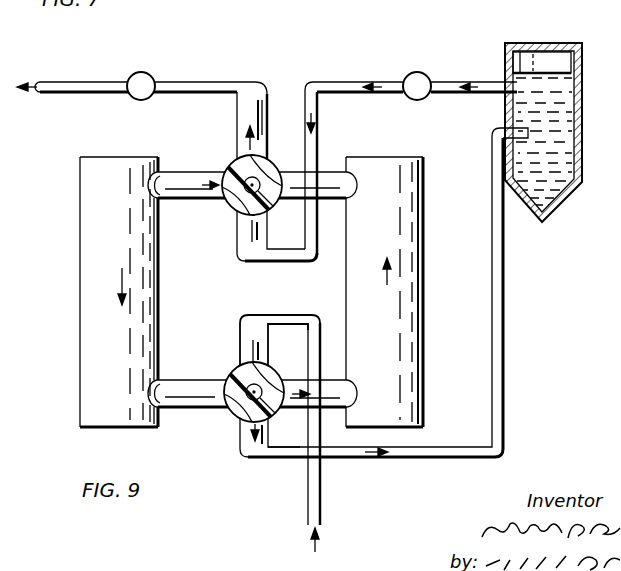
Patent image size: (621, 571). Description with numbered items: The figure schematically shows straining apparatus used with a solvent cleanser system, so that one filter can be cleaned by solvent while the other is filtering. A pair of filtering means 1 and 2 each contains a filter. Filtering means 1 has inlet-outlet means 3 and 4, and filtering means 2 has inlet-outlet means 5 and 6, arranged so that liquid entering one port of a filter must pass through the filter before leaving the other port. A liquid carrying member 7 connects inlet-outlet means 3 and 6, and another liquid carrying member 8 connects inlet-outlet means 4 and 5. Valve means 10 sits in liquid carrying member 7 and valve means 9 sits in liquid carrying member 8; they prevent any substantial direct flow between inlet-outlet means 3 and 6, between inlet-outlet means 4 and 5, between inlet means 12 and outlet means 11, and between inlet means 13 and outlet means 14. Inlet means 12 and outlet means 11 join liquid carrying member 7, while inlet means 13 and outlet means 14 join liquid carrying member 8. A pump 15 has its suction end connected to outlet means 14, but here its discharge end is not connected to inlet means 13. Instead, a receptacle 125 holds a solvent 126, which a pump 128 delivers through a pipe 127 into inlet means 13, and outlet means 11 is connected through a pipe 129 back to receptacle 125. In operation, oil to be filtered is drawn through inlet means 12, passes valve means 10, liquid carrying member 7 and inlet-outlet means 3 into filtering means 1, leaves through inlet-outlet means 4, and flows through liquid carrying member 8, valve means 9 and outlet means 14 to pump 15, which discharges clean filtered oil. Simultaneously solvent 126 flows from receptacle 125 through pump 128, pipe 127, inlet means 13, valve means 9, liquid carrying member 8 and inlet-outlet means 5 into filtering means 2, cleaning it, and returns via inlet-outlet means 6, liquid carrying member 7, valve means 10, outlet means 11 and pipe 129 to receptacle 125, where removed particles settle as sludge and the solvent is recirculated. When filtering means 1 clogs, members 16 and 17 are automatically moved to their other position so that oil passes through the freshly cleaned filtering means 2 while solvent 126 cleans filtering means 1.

The filtering means 1 is at (413, 258).
The filtering means 2 is at (97, 252).
The inlet-outlet means 3 is at (350, 387).
The inlet-outlet means 4 is at (353, 185).
The inlet-outlet means 5 is at (158, 190).
The inlet-outlet means 6 is at (160, 412).
The liquid carrying member 7 is at (202, 398).
The liquid carrying member 8 is at (177, 180).
The valve means 9 is at (268, 168).
The valve means 10 is at (273, 378).
The outlet means 11 is at (250, 442).
The inlet means 12 is at (252, 330).
The inlet means 13 is at (240, 227).
The outlet means 14 is at (243, 115).
The pump 15 is at (150, 73).
The member 16 is at (251, 378).
The member 17 is at (244, 171).
The receptacle 125 is at (533, 43).
The solvent 126 is at (530, 105).
The pipe 127 is at (355, 78).
The pump 128 is at (428, 73).
The pipe 129 is at (397, 457).